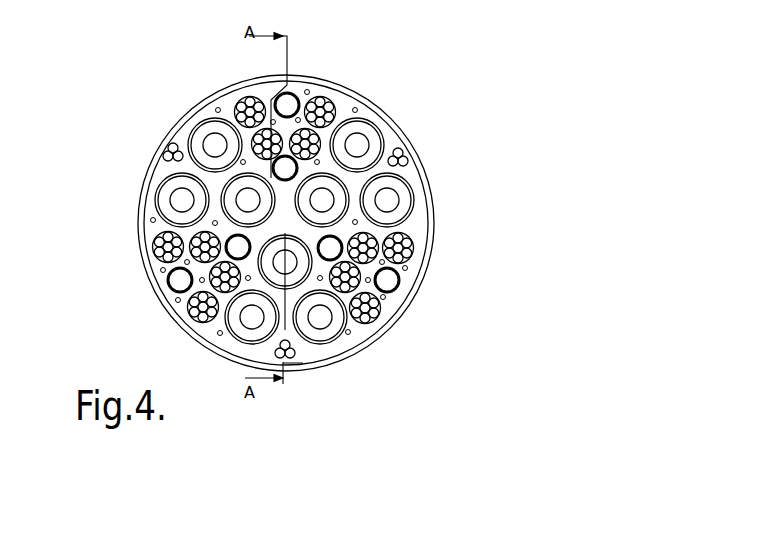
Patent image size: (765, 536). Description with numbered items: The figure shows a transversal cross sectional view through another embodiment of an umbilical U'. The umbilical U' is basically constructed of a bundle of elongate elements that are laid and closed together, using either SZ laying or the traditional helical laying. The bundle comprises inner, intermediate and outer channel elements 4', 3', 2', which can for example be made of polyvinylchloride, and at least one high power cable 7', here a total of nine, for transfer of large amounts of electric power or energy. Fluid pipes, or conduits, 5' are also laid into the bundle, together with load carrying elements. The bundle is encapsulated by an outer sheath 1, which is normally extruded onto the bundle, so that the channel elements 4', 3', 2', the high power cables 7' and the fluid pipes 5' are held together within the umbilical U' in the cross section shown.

The umbilical U' is at (257, 243).
The outer sheath 1 is at (428, 250).
The outer channel element 2' is at (418, 162).
The intermediate channel element 3' is at (435, 218).
The inner channel element 4' is at (337, 341).
The fluid pipe 5' is at (436, 297).
The high power cable 7' is at (389, 105).